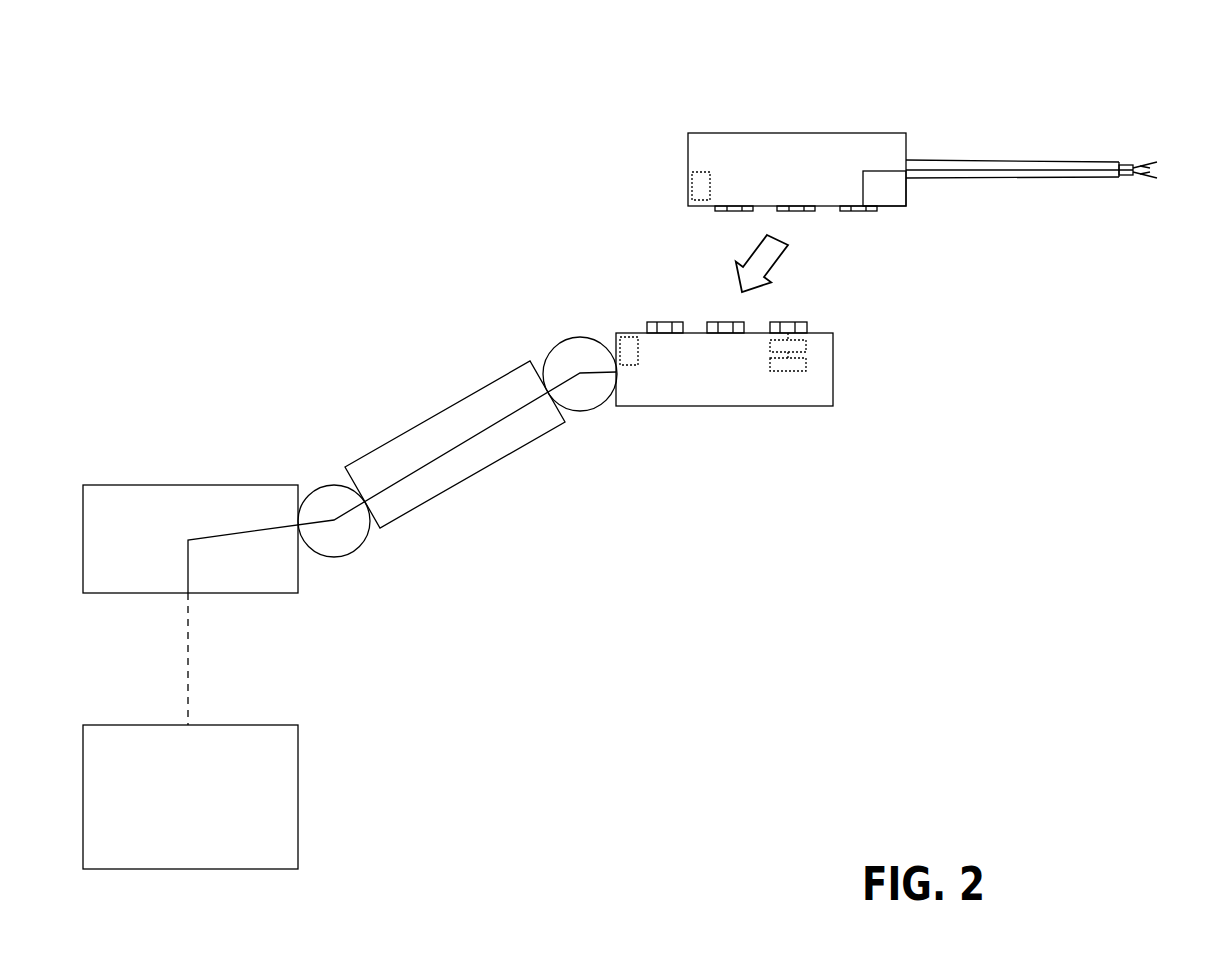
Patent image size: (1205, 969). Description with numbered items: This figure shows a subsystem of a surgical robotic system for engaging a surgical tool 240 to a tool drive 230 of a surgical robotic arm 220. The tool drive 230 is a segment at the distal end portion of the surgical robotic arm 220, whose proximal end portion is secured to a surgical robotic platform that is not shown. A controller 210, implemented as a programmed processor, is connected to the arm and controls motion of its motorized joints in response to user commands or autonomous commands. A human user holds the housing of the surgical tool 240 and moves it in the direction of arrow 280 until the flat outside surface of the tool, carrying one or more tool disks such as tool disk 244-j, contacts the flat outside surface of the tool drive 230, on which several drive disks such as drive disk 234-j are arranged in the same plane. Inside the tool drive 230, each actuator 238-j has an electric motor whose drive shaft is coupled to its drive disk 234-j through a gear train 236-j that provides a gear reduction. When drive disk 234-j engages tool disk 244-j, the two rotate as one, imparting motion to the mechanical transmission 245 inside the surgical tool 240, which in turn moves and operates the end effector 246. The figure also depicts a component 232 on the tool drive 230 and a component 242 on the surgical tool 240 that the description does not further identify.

The controller 210 is at (204, 824).
The surgical robotic arm 220 is at (334, 440).
The tool drive 230 is at (712, 418).
The tool drive electrical interface 232 is at (628, 337).
The drive disk 234-j is at (808, 327).
The gear train 236-j is at (807, 348).
The actuator 238-j is at (807, 363).
The surgical tool 240 is at (792, 122).
The tool electrical interface 242 is at (690, 186).
The tool disk 244-j is at (855, 212).
The mechanical transmission 245 is at (862, 182).
The end effector 246 is at (1127, 180).
The arrow 280 is at (767, 255).